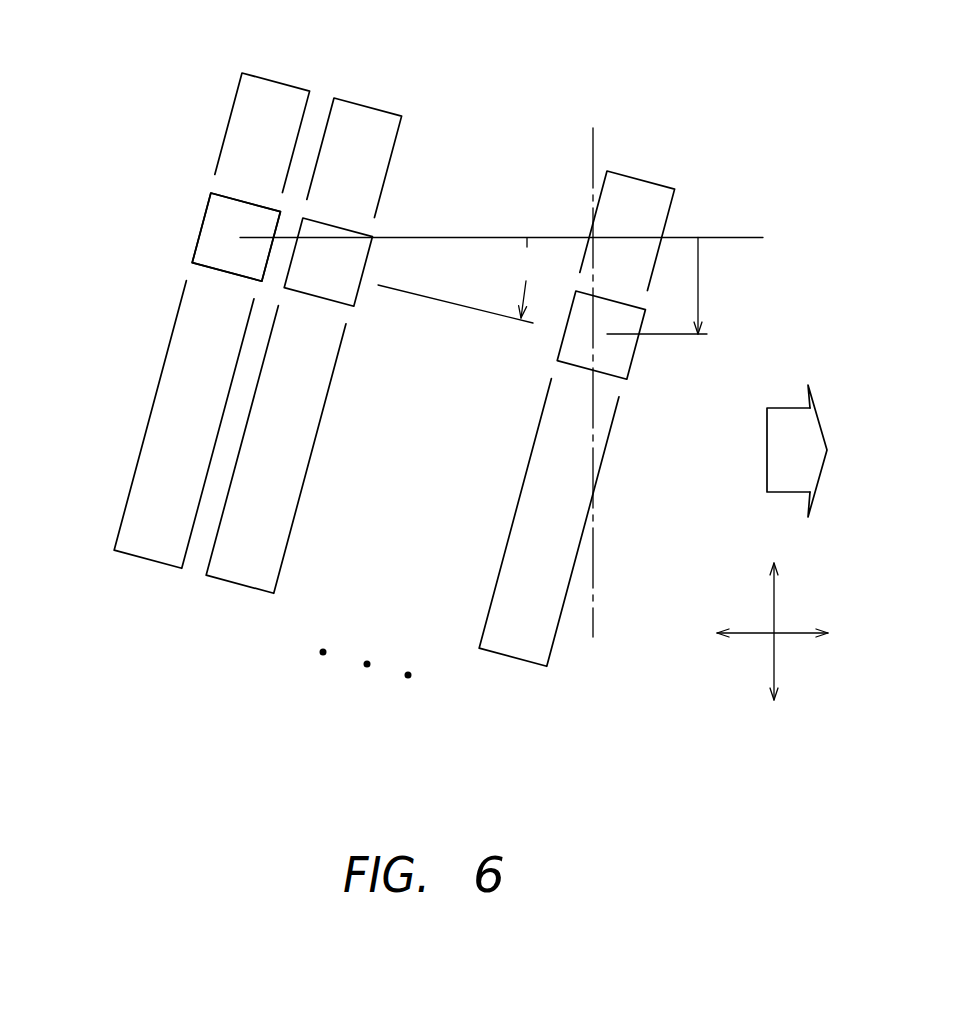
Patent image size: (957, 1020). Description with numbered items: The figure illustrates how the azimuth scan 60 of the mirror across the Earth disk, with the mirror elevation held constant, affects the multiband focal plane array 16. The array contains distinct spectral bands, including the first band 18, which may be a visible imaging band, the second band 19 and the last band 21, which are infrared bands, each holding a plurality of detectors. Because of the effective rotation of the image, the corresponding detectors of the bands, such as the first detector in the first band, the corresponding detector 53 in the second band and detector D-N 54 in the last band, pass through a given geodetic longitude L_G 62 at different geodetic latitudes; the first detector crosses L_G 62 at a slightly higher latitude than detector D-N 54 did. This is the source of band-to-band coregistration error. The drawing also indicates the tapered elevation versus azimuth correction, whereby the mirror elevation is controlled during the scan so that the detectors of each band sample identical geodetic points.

The multiband focal plane array 16 is at (677, 83).
The first band 18 is at (277, 83).
The second band 19 is at (390, 110).
The last band 21 is at (663, 183).
The corresponding detector 53 is at (347, 230).
The detector D-N 54 is at (557, 353).
The azimuth scan 60 is at (820, 420).
The geodetic longitude L_G 62 is at (595, 590).